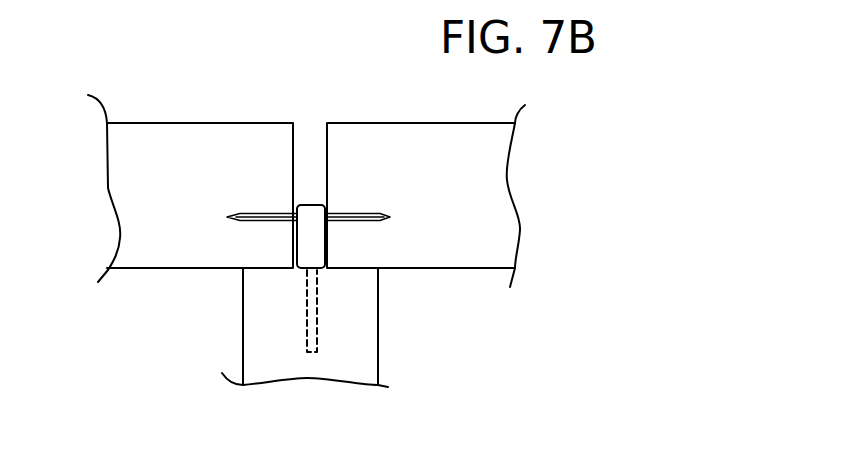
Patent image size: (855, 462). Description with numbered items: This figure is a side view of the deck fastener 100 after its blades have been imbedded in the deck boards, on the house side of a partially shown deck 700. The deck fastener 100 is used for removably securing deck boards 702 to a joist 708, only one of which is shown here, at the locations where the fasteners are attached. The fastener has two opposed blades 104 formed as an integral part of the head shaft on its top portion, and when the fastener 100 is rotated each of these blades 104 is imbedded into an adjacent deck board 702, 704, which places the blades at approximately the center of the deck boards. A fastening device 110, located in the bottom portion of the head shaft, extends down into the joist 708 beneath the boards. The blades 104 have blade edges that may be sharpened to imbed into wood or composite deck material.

The deck 700 is at (572, 167).
The deck boards 702 is at (255, 122).
The second housing portion 704 is at (435, 122).
The joist 708 is at (378, 330).
The deck fastener 100 is at (266, 238).
The blades 104 is at (262, 208).
The fastening device 110 is at (306, 318).